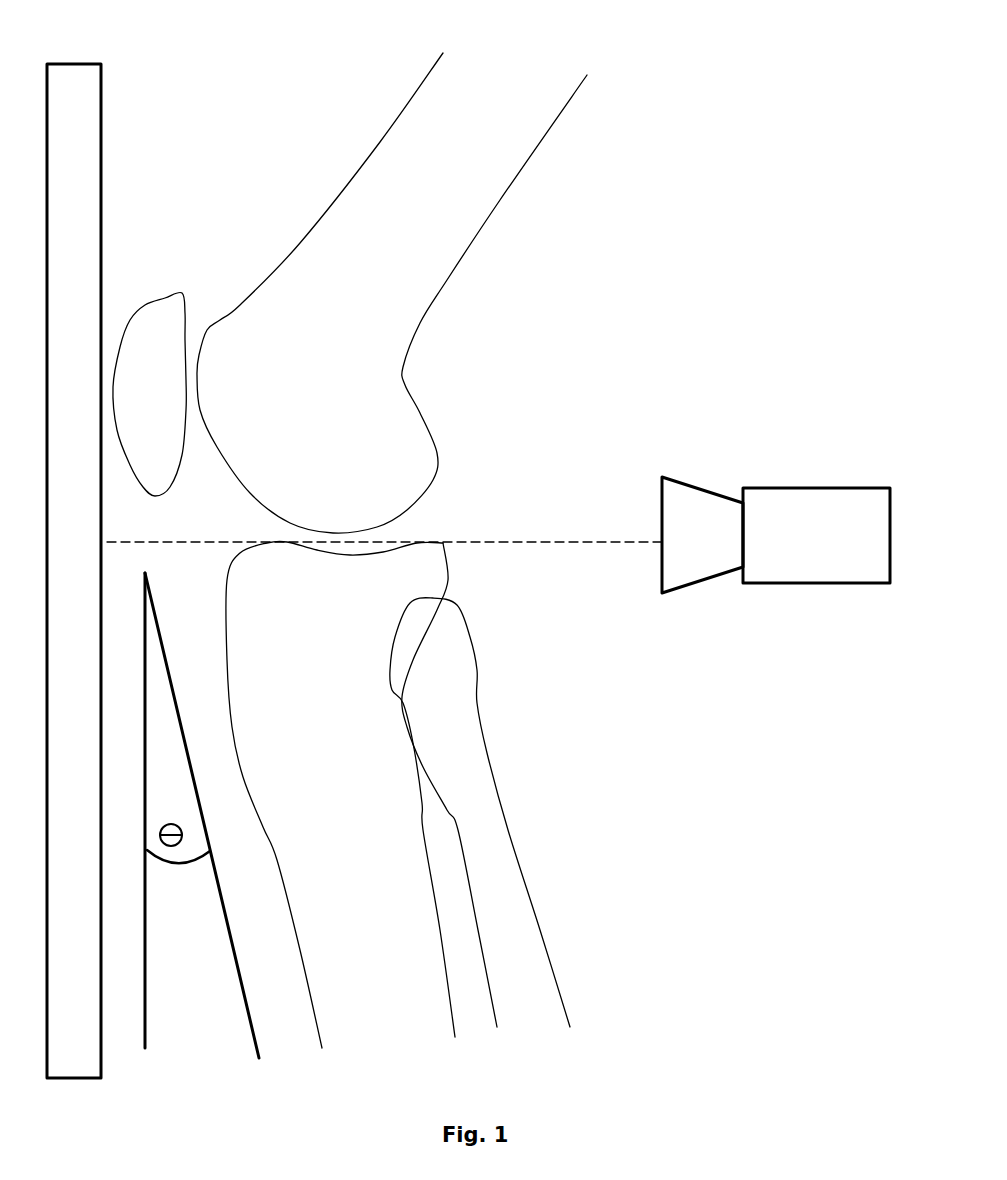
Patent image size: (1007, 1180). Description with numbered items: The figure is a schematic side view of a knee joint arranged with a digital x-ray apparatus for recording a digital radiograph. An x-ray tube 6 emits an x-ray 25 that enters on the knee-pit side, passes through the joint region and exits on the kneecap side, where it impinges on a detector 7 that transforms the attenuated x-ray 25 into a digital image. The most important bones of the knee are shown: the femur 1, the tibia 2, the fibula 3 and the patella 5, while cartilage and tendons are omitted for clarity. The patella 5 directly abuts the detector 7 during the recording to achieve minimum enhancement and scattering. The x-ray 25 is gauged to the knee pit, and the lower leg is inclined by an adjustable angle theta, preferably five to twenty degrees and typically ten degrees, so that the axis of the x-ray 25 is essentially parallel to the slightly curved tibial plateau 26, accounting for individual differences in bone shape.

The femur 1 is at (474, 128).
The tibia 2 is at (332, 778).
The fibula 3 is at (467, 720).
The patella 5 is at (153, 377).
The x-ray tube 6 is at (777, 512).
The detector 7 is at (93, 148).
The x-ray 25 is at (548, 543).
The tibial plateau 26 is at (360, 547).